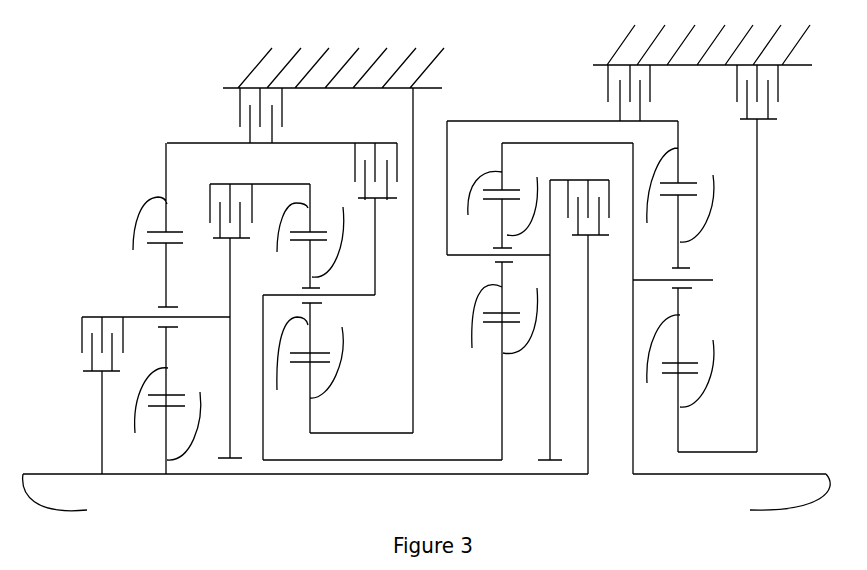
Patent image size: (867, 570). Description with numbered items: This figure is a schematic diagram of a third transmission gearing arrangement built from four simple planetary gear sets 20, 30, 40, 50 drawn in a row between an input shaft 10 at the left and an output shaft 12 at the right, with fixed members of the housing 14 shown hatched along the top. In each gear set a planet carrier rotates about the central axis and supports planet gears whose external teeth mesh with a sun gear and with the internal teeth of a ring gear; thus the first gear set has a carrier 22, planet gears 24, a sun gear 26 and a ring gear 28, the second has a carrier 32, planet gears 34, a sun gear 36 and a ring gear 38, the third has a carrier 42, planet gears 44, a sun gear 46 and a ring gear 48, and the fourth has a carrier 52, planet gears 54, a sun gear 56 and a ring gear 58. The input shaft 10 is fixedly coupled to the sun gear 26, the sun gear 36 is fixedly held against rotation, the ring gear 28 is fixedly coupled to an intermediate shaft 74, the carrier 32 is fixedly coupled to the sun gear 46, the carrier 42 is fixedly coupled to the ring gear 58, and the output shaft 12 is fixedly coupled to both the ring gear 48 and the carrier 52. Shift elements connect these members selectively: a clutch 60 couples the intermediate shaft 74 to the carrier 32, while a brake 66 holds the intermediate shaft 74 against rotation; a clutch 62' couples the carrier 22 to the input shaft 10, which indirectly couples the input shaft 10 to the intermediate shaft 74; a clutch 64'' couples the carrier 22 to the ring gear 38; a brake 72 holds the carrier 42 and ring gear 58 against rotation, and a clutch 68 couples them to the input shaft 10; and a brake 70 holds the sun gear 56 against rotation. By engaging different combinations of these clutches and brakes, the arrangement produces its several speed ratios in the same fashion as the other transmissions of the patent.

The input shaft 10 is at (305, 494).
The output shaft 12 is at (731, 494).
The housing / fixed member 14 is at (257, 70).
The first simple planetary gear set 20 is at (198, 329).
The planet carrier 22 is at (230, 280).
The planet gears 24 is at (167, 277).
The sun gear 26 is at (180, 400).
The ring gear 28 is at (153, 225).
The second simple planetary gear set 30 is at (382, 301).
The planet carrier 32 is at (394, 260).
The planet gears 34 is at (315, 301).
The sun gear 36 is at (321, 368).
The ring gear 38 is at (300, 236).
The third simple planetary gear set 40 is at (562, 318).
The planet carrier 42 is at (548, 278).
The planet gears 44 is at (504, 260).
The sun gear 46 is at (516, 361).
The ring gear 48 is at (490, 195).
The fourth simple planetary gear set 50 is at (629, 318).
The planet carrier 52 is at (632, 417).
The planet gears 54 is at (681, 281).
The sun gear 56 is at (694, 370).
The ring gear 58 is at (668, 194).
The clutch 60 is at (390, 142).
The clutch 62' is at (135, 379).
The clutch 64'' is at (243, 194).
The brake 66 is at (238, 110).
The clutch 68 is at (568, 180).
The brake 70 is at (778, 82).
The brake 72 is at (608, 78).
The intermediate shaft 74 is at (341, 145).